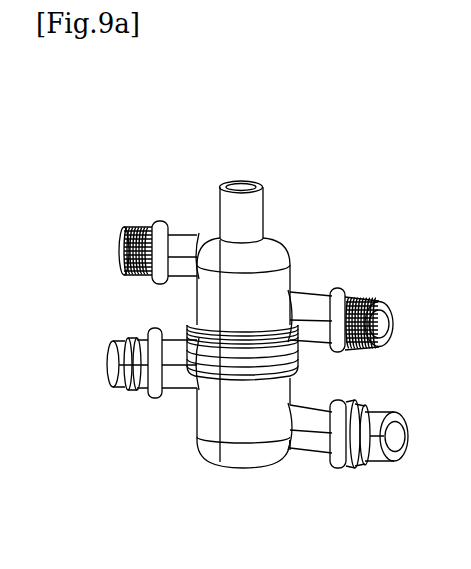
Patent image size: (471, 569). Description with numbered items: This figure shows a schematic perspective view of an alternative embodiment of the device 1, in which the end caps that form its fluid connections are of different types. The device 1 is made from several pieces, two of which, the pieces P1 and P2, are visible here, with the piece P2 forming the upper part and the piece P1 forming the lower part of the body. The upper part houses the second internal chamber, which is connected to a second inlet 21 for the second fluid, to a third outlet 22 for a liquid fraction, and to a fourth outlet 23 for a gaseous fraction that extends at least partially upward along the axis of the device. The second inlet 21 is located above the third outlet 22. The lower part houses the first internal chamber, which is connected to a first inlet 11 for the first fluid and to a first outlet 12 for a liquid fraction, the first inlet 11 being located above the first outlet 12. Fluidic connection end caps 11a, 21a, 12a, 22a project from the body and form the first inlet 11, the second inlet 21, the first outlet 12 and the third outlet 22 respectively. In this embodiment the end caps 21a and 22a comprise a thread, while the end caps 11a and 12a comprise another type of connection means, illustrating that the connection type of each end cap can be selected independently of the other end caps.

The device 1 is at (166, 120).
The first inlet 11 is at (110, 382).
The end cap 11a is at (108, 368).
The first outlet 12 is at (305, 447).
The end cap 12a is at (377, 463).
The second inlet 21 is at (152, 223).
The end cap 21a is at (120, 243).
The third outlet 22 is at (308, 293).
The end cap 22a is at (365, 293).
The fourth outlet 23 is at (259, 184).
The piece P1 is at (201, 462).
The piece P2 is at (290, 230).